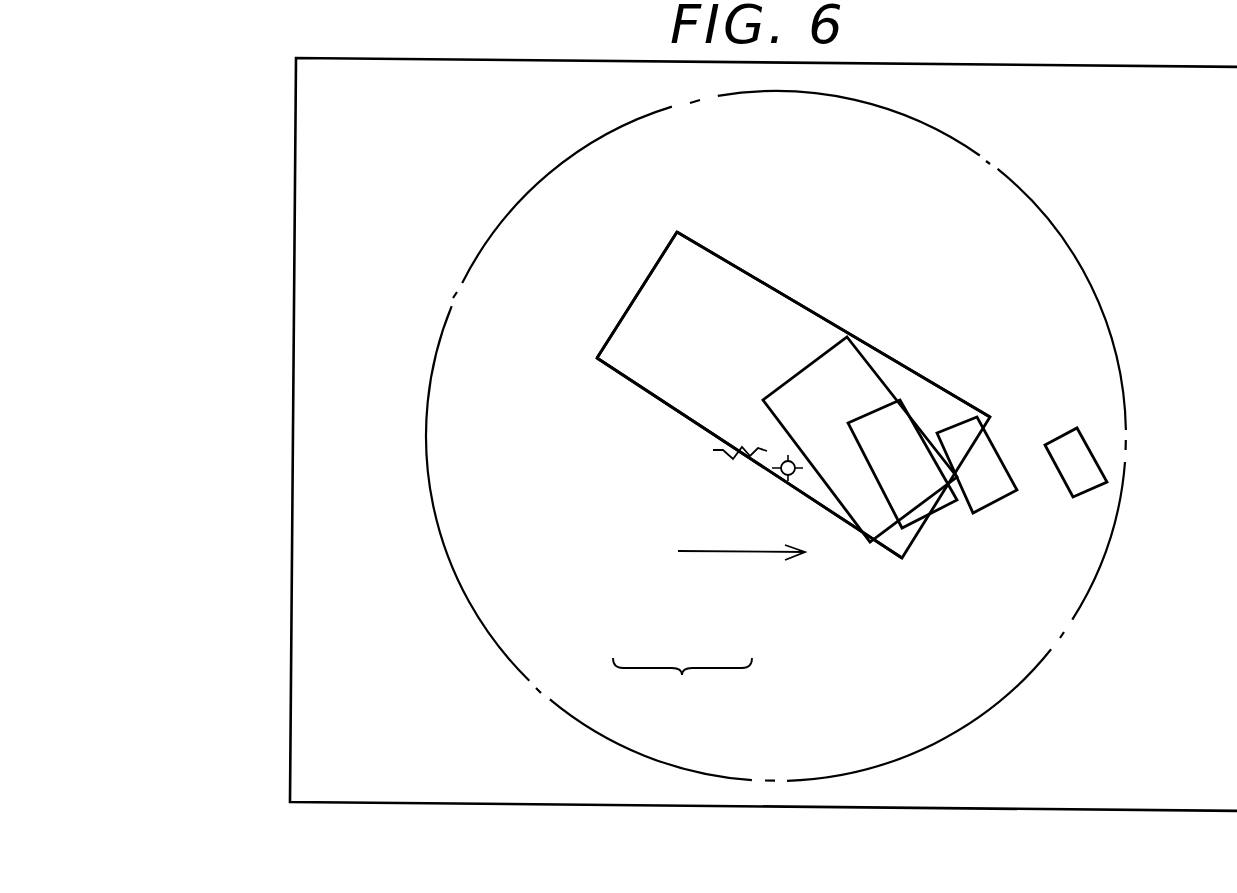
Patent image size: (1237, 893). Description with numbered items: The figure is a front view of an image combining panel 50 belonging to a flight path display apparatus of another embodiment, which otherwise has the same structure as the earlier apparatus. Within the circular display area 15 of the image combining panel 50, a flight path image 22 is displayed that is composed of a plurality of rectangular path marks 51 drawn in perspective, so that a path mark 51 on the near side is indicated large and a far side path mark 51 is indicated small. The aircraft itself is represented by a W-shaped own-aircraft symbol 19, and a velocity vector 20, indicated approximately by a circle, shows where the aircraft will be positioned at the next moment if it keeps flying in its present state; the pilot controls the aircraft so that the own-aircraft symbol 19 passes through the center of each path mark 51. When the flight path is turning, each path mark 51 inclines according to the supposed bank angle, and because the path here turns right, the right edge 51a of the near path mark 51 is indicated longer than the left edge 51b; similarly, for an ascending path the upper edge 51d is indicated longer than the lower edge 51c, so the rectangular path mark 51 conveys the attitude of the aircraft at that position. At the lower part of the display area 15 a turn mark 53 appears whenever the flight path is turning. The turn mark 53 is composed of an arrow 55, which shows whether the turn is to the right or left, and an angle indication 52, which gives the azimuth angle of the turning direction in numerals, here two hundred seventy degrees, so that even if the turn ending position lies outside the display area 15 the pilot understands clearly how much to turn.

The image combining panel 50 is at (296, 164).
The display area 15 is at (505, 219).
The flight path image 22 is at (718, 252).
The path mark 51 is at (866, 348).
The right edge 51a is at (917, 537).
The left edge 51b is at (633, 302).
The lower edge 51c is at (655, 398).
The upper edge 51d is at (782, 293).
The own-aircraft symbol 19 is at (715, 456).
The velocity vector 20 is at (782, 474).
The arrow 55 is at (697, 552).
The angle indication 52 is at (733, 607).
The turn mark 53 is at (682, 692).